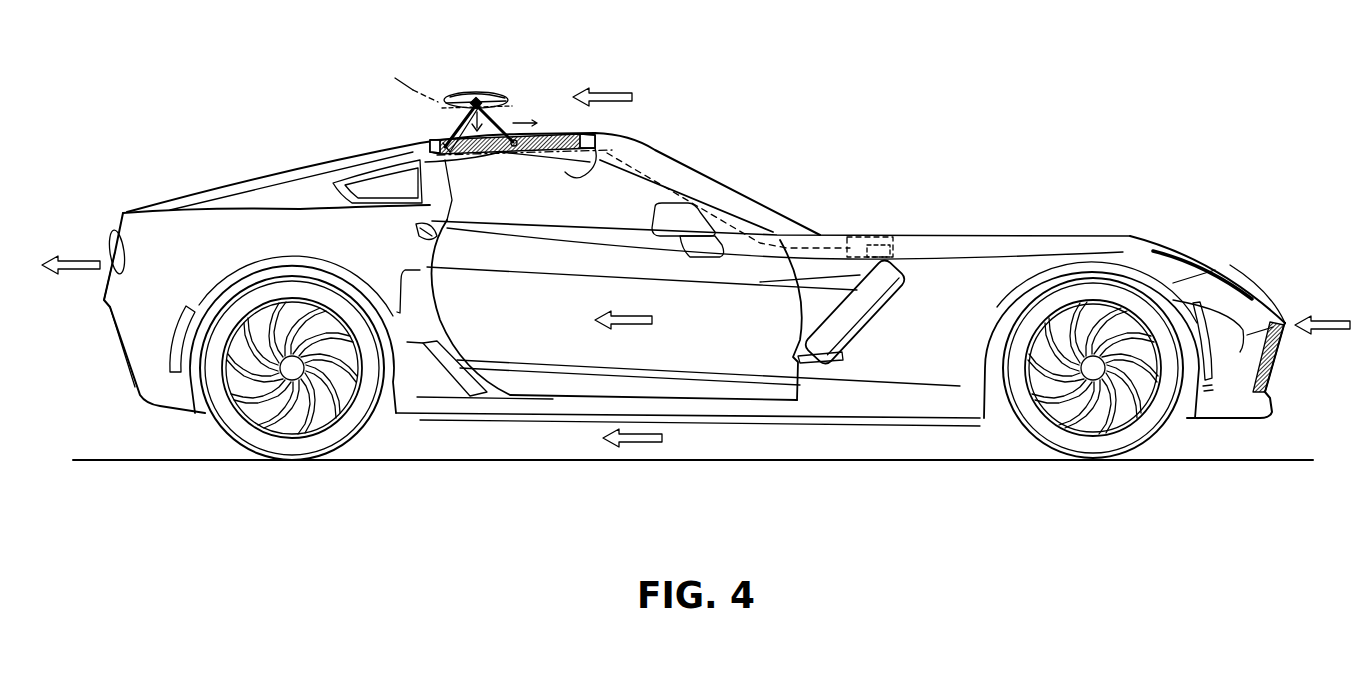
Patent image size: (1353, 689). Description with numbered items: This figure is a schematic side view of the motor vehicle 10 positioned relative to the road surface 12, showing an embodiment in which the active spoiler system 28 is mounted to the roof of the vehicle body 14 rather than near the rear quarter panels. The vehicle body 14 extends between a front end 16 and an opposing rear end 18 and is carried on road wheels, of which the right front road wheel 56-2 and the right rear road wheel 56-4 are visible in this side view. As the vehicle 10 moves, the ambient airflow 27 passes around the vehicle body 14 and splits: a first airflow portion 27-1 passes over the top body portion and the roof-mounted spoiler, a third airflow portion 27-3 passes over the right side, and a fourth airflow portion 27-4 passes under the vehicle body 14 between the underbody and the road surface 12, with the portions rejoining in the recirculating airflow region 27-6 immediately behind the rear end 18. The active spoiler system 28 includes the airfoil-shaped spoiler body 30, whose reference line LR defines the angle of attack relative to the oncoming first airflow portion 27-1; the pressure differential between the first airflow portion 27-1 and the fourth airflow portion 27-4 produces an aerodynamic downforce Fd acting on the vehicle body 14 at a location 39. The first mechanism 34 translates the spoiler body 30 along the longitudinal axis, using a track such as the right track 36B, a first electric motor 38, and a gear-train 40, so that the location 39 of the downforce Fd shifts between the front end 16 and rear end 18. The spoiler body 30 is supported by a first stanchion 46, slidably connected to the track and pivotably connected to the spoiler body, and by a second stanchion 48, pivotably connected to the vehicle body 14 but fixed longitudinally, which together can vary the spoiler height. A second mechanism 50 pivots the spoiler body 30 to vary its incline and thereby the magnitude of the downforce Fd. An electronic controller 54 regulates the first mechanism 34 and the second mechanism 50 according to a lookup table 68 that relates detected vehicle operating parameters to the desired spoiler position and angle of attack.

The motor vehicle 10 is at (694, 257).
The road surface 12 is at (1260, 462).
The vehicle body 14 is at (384, 254).
The front end 16 is at (1258, 313).
The rear end 18 is at (107, 291).
The ambient airflow 27 is at (1333, 318).
The first airflow portion 27-1 is at (612, 90).
The third airflow portion 27-3 is at (631, 313).
The fourth airflow portion 27-4 is at (641, 446).
The recirculating airflow region 27-6 is at (82, 258).
The active spoiler system 28 is at (491, 83).
The spoiler body 30 is at (469, 99).
The first mechanism 34 is at (553, 158).
The right track 36B is at (575, 152).
The first electric motor 38 is at (590, 142).
The location of aerodynamic downforce 39 is at (470, 152).
The gear-train 40 is at (554, 131).
The first stanchion 46 is at (508, 115).
The second stanchion 48 is at (445, 137).
The second mechanism 50 is at (477, 100).
The electronic controller 54 is at (870, 237).
The right front road wheel 56-2 is at (1037, 423).
The right rear road wheel 56-4 is at (343, 428).
The lookup table 68 is at (895, 248).
The reference line LR is at (404, 75).
The aerodynamic downforce Fd is at (493, 155).